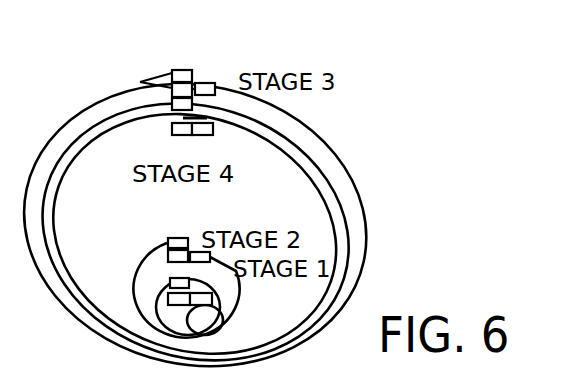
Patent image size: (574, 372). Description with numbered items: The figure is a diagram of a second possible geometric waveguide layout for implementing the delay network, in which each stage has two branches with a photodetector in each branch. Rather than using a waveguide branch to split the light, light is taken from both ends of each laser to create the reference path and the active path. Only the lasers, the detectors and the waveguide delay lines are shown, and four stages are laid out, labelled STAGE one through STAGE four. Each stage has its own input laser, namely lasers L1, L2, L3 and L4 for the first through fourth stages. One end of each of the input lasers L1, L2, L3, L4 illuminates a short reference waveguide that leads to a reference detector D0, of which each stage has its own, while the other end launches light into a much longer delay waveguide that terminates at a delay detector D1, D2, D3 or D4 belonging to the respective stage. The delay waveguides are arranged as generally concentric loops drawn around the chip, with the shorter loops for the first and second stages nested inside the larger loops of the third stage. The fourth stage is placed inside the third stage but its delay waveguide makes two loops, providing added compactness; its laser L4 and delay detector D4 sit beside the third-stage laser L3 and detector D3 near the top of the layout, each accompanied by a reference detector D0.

The reference detector D0 is at (140, 82).
The delay detector D1 is at (189, 281).
The delay detector D2 is at (168, 240).
The delay detector D3 is at (182, 70).
The delay detector D4 is at (192, 104).
The input laser L1 is at (219, 321).
The input laser L2 is at (195, 252).
The input laser L3 is at (200, 83).
The input laser L4 is at (211, 134).